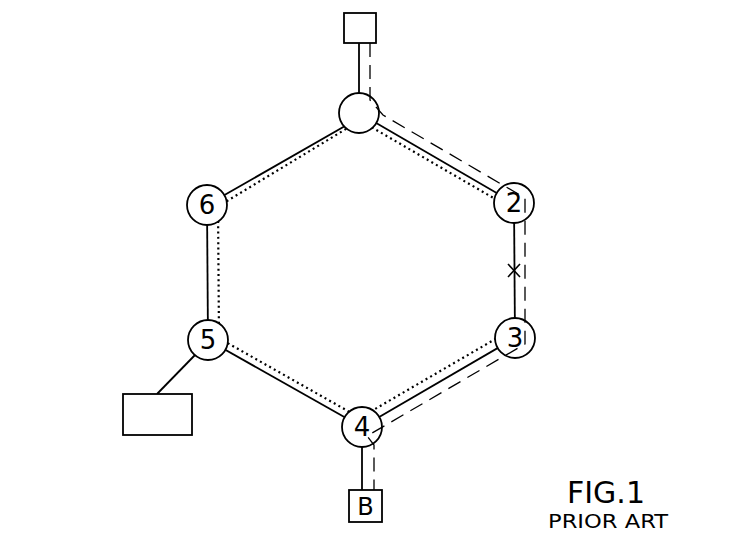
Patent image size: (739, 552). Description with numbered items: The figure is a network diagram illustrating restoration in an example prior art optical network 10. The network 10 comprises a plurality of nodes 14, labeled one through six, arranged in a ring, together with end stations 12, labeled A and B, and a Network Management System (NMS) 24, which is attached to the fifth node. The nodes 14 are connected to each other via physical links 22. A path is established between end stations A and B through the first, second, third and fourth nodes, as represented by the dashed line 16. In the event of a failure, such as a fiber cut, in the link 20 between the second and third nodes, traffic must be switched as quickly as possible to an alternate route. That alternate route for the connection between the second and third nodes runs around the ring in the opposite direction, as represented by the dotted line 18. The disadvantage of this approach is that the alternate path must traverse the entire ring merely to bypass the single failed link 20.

The network 10 is at (108, 94).
The end stations 12 is at (377, 33).
The nodes 14 is at (372, 108).
The dashed line 16 is at (425, 138).
The dotted line 18 is at (432, 167).
The link 20 is at (513, 293).
The physical links 22 is at (460, 167).
The Network Management System (NMS) 24 is at (142, 393).